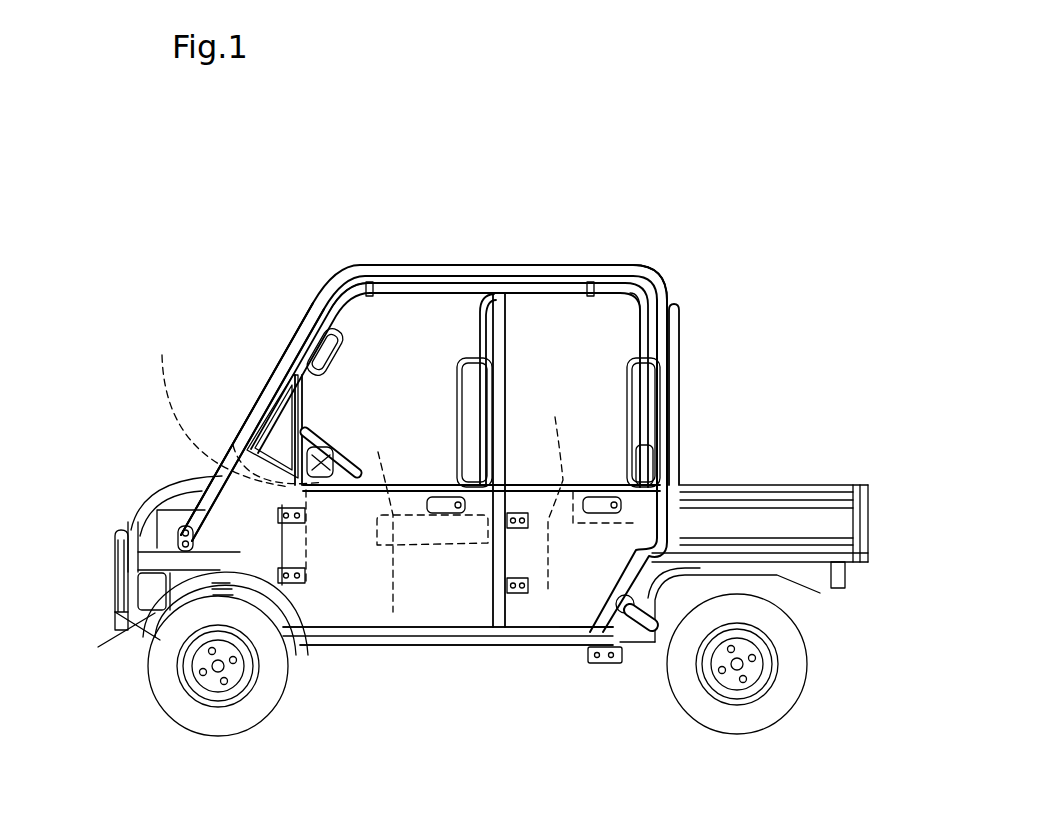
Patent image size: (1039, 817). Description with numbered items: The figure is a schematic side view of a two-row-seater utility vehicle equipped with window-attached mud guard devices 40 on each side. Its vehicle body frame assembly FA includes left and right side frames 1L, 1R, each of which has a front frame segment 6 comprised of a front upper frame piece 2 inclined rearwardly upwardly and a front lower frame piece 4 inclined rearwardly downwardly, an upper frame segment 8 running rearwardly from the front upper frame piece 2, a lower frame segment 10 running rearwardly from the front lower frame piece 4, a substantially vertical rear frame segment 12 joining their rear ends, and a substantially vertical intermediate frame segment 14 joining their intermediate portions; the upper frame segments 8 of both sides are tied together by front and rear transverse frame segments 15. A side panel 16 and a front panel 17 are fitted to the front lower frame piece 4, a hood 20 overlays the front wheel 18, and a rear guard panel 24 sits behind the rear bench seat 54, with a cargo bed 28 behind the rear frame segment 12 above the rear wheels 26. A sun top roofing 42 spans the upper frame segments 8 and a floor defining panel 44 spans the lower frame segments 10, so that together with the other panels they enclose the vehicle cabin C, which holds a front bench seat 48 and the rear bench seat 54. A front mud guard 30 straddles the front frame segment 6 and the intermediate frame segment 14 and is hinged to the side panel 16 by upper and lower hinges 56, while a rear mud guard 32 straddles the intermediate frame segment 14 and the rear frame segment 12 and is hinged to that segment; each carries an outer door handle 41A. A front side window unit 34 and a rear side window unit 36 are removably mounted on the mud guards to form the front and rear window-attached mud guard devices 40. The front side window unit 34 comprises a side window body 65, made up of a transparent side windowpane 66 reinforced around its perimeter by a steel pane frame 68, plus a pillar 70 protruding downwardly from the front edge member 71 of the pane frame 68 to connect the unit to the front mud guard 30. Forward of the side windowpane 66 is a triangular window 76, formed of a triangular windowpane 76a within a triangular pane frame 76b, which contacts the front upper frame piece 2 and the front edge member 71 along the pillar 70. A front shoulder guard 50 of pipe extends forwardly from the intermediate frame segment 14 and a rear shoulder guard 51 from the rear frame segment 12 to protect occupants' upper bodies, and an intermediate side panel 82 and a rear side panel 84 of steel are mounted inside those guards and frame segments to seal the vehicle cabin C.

The left side frame 1L is at (338, 262).
The right side frame 1R is at (348, 311).
The front upper frame piece 2 is at (322, 292).
The front lower frame piece 4 is at (164, 420).
The front frame segment 6 is at (150, 322).
The upper frame segment 8 is at (413, 290).
The lower frame segment 10 is at (447, 629).
The rear frame segment 12 is at (666, 302).
The intermediate frame segment 14 is at (498, 343).
The transverse frame segment 15 is at (370, 281).
The side panel 16 is at (262, 560).
The front panel 17 is at (130, 628).
The front wheel 18 is at (168, 704).
The hood 20 is at (140, 502).
The rear guard panel 24 is at (681, 420).
The rear wheel 26 is at (773, 728).
The cargo bed 28 is at (857, 485).
The front mud guard 30 is at (357, 623).
The rear mud guard 32 is at (594, 665).
The front side window unit 34 is at (370, 484).
The rear side window unit 36 is at (560, 630).
The window-attached mud guard device 40 is at (425, 698).
The outer door handle 41A is at (440, 497).
The sun top roofing 42 is at (617, 265).
The floor defining panel 44 is at (478, 632).
The front bench seat 48 is at (425, 517).
The front shoulder guard 50 is at (479, 385).
The rear shoulder guard 51 is at (639, 382).
The rear bench seat 54 is at (586, 486).
The hinge 56 is at (291, 585).
The side window body 65 is at (521, 325).
The side windowpane 66 is at (447, 284).
The pane frame 68 is at (483, 292).
The pillar 70 is at (304, 448).
The front edge member 71 is at (312, 328).
The triangular window 76 is at (265, 396).
The triangular windowpane 76a is at (292, 432).
The triangular pane frame 76b is at (260, 428).
The intermediate side panel 82 is at (458, 418).
The rear side panel 84 is at (646, 420).
The vehicle cabin C is at (527, 332).
The vehicle body frame assembly FA is at (669, 262).